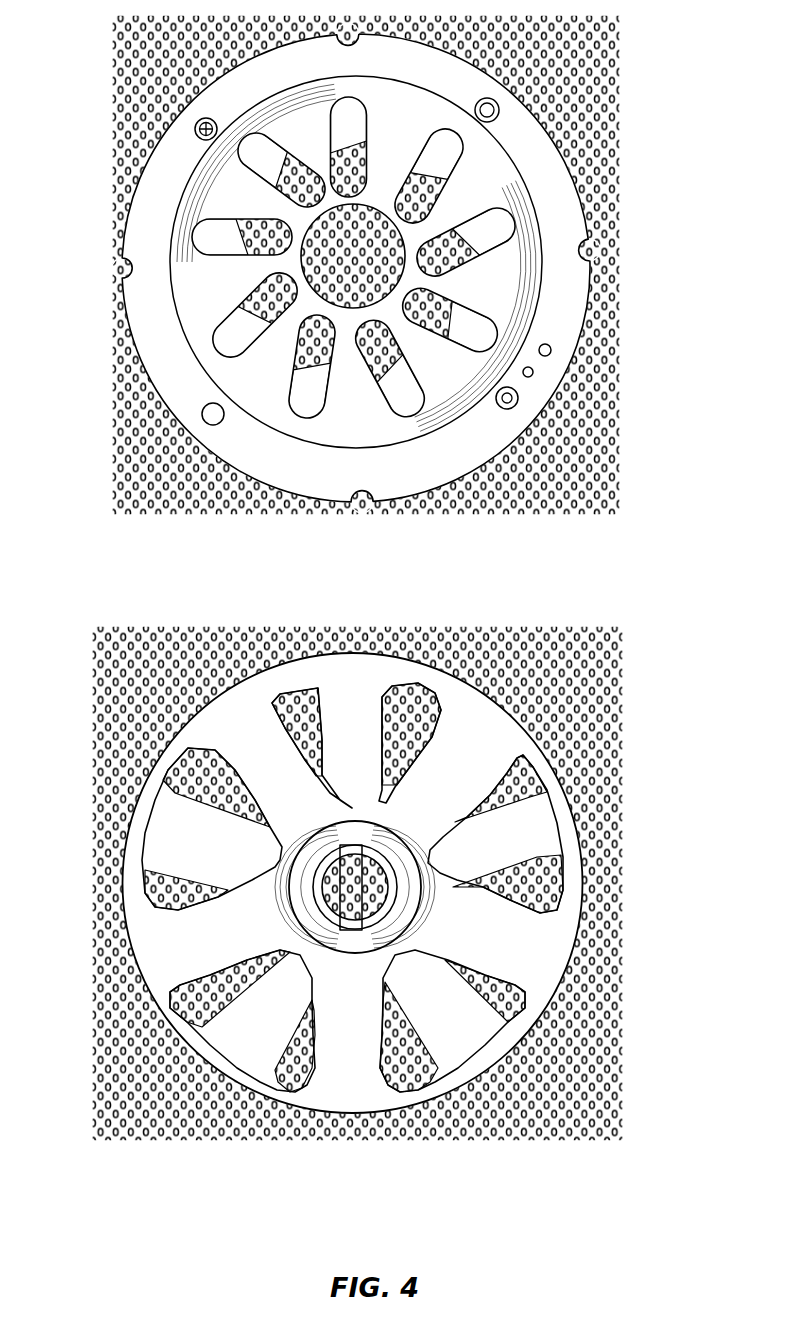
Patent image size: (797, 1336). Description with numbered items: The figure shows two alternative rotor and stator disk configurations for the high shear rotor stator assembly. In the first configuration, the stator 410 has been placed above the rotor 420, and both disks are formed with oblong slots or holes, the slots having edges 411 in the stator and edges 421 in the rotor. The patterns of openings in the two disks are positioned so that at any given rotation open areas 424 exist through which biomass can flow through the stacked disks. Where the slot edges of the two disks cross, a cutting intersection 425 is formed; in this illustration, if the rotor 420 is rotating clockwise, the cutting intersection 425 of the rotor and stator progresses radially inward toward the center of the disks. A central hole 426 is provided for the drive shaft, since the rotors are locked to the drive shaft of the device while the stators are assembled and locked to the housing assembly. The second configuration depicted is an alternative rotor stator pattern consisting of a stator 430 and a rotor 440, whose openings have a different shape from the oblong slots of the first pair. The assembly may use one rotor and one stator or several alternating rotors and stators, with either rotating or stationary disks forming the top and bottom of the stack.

The stator 410 is at (528, 292).
The edges 411 is at (432, 210).
The rotor 420 is at (490, 232).
The edges 421 is at (447, 312).
The open areas 424 is at (268, 236).
The cutting intersection 425 is at (225, 217).
The hole 426 is at (297, 258).
The stator 430 is at (475, 942).
The rotor 440 is at (470, 848).